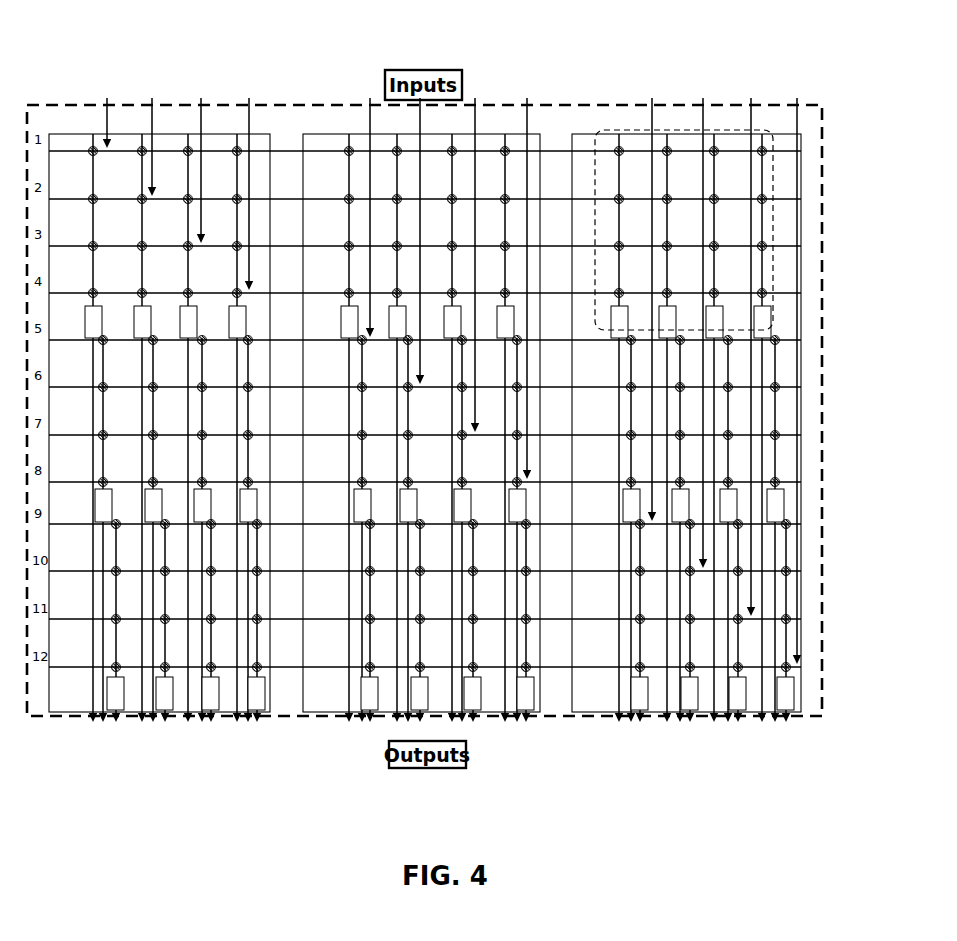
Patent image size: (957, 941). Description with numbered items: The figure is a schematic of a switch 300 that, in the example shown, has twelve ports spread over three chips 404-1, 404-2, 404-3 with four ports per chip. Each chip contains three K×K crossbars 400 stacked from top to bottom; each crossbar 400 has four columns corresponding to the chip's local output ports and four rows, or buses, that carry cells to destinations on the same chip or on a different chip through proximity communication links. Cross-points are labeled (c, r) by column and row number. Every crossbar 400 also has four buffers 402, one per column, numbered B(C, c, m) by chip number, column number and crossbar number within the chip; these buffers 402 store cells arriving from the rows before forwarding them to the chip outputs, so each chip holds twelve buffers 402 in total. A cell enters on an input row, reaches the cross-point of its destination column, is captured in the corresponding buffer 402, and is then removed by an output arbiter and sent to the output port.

The switch 300 is at (62, 107).
The crossbar 400 is at (655, 175).
The buffer 402 is at (306, 192).
The chip 404-1 is at (62, 720).
The chip 404-2 is at (409, 429).
The chip 404-3 is at (684, 416).